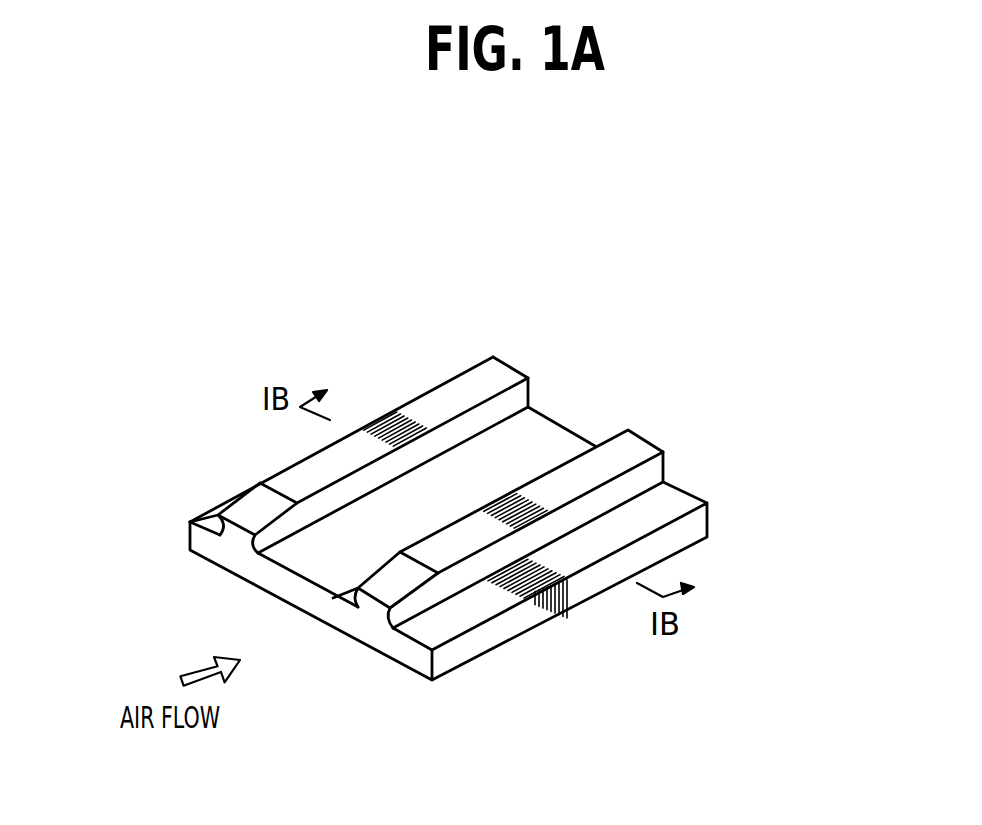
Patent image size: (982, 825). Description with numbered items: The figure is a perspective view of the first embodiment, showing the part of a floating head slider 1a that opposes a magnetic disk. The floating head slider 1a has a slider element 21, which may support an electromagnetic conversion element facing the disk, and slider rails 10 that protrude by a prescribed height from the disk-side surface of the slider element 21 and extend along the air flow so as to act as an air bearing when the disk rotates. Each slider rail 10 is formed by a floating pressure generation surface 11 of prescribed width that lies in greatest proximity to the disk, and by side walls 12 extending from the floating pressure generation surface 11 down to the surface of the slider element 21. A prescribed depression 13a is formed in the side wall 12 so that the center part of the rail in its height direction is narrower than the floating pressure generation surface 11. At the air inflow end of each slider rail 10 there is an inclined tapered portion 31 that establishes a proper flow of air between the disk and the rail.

The floating head slider 1a is at (513, 144).
The slider rail 10 is at (542, 719).
The floating pressure generation surface 11 is at (671, 378).
The side wall 12 is at (527, 405).
The depression 13a is at (552, 532).
The slider element 21 is at (575, 438).
The tapered portion 31 is at (248, 518).